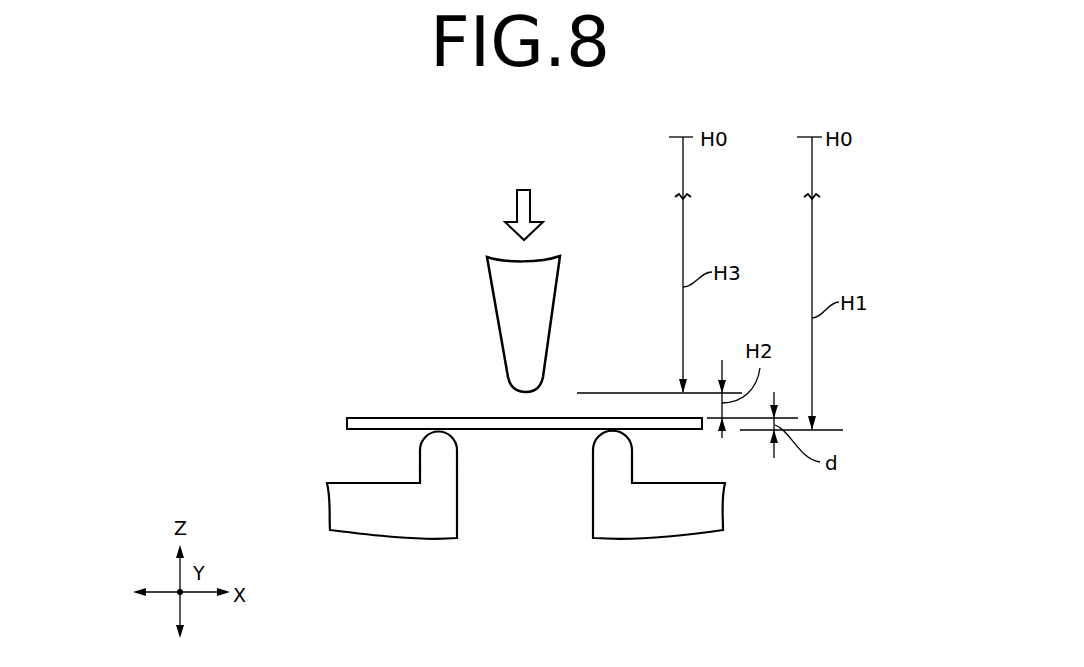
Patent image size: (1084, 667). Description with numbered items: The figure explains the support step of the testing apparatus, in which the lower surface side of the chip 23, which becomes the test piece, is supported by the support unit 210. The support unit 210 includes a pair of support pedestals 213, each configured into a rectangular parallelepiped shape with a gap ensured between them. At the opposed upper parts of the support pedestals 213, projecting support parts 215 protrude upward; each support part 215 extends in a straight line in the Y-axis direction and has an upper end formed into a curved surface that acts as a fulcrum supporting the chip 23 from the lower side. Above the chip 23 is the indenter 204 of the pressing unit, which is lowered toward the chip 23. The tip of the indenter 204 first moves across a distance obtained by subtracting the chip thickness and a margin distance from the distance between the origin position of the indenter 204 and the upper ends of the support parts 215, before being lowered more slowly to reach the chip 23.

The chip 23 is at (401, 378).
The indenter 204 is at (548, 327).
The support unit 210 is at (539, 549).
The support pedestal 213 is at (422, 539).
The support part 215 is at (420, 465).